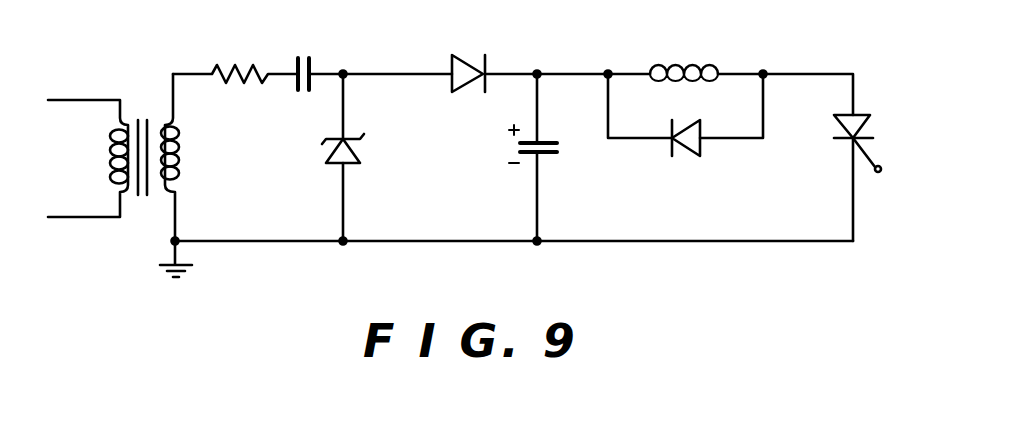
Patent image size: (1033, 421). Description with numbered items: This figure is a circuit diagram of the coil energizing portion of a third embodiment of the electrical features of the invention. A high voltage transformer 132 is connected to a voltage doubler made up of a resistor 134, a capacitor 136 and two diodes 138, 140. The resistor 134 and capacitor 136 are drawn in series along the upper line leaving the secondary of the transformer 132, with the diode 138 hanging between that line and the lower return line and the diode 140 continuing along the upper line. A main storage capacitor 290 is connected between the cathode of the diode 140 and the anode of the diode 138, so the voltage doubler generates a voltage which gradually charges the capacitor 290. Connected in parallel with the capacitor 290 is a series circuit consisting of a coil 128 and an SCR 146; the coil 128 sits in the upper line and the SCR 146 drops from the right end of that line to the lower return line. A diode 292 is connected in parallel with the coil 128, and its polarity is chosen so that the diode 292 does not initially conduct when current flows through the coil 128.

The high voltage transformer 132 is at (144, 93).
The resistor 134 is at (238, 55).
The capacitor 136 is at (310, 58).
The diode 138 is at (357, 143).
The diode 140 is at (463, 53).
The main storage capacitor 290 is at (558, 148).
The coil 128 is at (690, 68).
The diode 292 is at (678, 150).
The SCR 146 is at (863, 128).